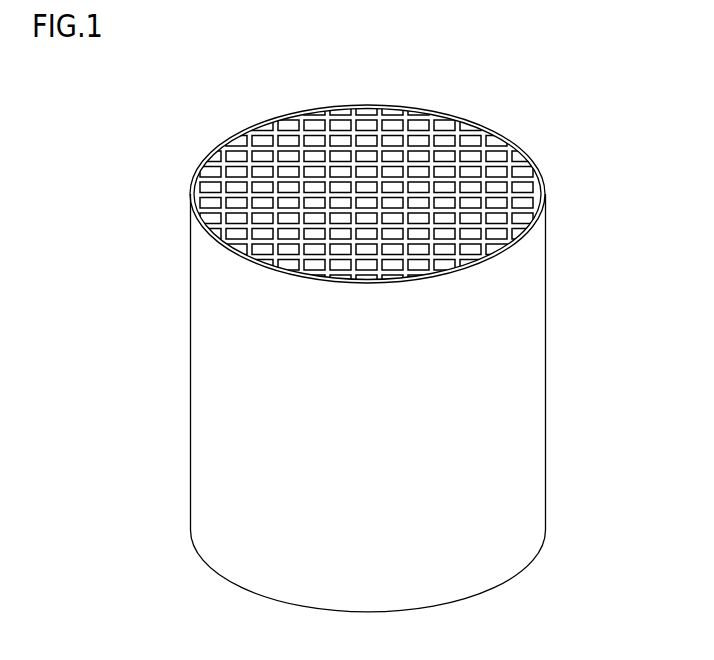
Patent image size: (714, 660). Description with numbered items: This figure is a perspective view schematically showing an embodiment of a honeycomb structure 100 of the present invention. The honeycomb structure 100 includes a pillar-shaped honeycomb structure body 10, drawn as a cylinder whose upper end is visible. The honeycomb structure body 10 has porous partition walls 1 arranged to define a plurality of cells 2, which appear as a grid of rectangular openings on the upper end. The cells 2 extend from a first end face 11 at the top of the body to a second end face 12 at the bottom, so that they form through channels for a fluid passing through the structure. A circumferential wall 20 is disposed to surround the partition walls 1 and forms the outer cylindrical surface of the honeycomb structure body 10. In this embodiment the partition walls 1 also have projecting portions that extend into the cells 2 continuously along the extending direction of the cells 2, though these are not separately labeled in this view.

The honeycomb structure 100 is at (607, 70).
The honeycomb structure body 10 is at (495, 124).
The first end face 11 is at (242, 132).
The second end face 12 is at (433, 606).
The circumferential wall 20 is at (513, 308).
The partition walls 1 is at (330, 140).
The cells 2 is at (368, 125).